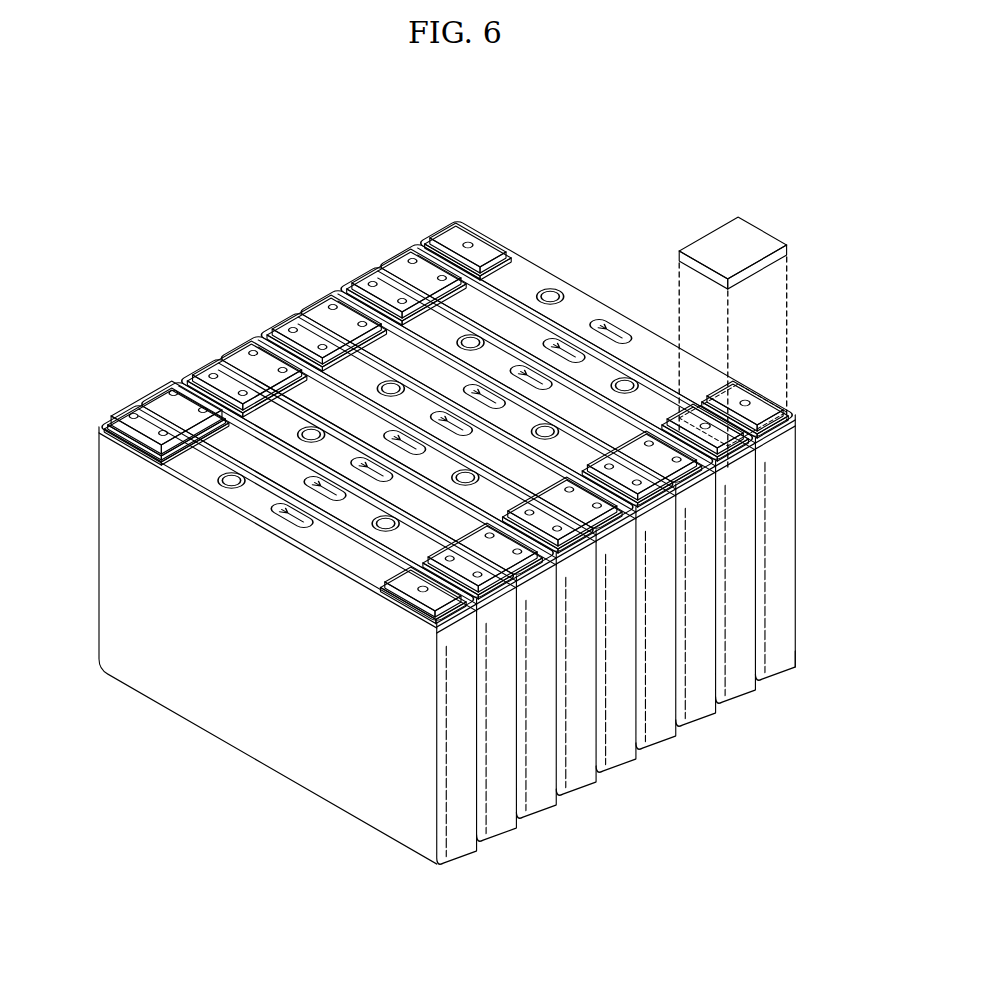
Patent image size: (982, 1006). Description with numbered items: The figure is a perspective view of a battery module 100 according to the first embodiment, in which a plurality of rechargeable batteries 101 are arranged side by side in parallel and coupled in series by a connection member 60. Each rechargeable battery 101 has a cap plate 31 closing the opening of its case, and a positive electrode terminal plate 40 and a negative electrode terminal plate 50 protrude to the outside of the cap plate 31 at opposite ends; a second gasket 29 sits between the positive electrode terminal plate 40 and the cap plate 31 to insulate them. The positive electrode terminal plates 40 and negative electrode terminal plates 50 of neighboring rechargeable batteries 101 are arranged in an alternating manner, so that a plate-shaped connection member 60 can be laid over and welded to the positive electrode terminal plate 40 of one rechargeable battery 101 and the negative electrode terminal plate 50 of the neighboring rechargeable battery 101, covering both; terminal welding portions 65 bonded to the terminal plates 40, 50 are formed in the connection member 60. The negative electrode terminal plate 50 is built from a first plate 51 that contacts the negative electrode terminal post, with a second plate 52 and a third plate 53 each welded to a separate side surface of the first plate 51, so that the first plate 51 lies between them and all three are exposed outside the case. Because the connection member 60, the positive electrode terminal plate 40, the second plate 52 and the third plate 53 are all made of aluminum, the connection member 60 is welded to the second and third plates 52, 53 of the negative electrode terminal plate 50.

The battery module 100 is at (386, 167).
The rechargeable battery 101 is at (457, 562).
The second gasket 29 is at (782, 420).
The cap plate 31 is at (337, 547).
The positive electrode terminal plate 40 is at (412, 618).
The negative electrode terminal plate 50 is at (704, 424).
The first plate 51 is at (486, 255).
The second plate 52 is at (455, 236).
The third plate 53 is at (503, 250).
The connection member 60 is at (445, 330).
The terminal welding portion 65 is at (168, 390).